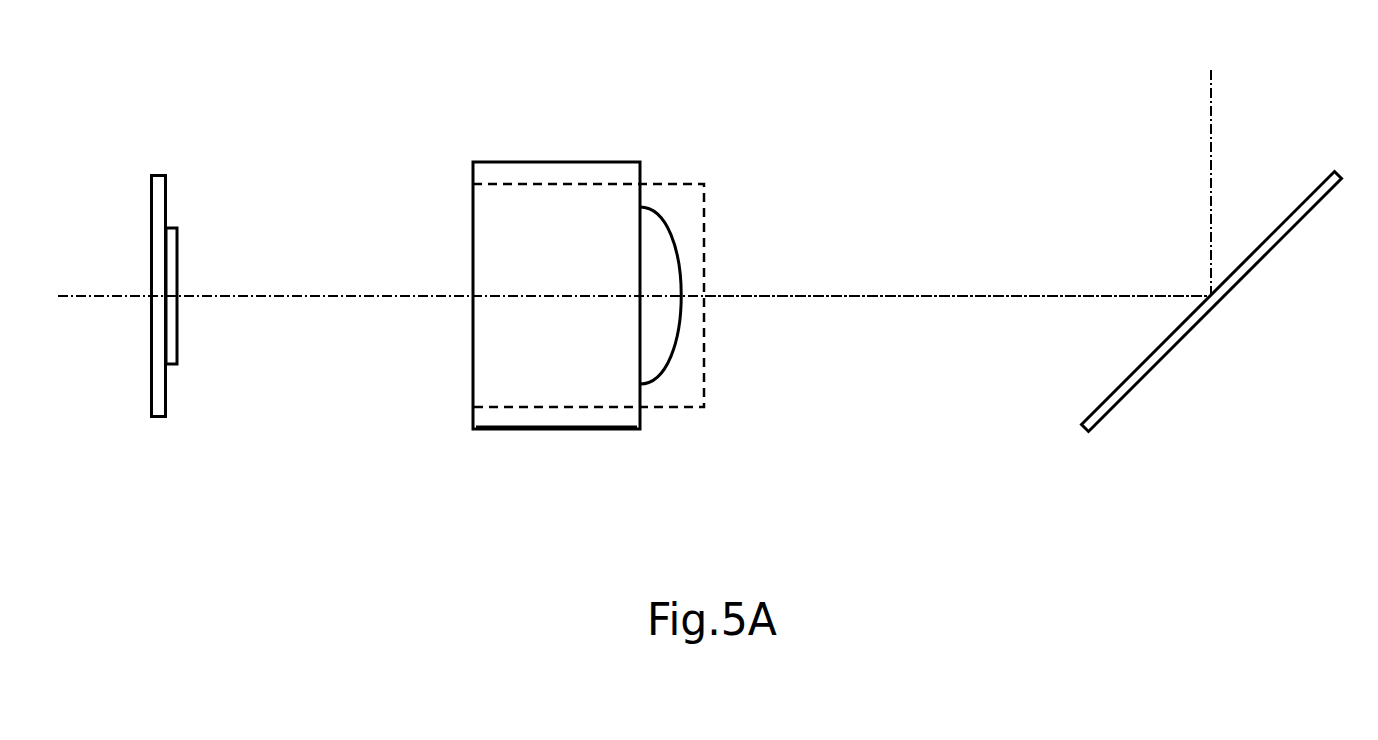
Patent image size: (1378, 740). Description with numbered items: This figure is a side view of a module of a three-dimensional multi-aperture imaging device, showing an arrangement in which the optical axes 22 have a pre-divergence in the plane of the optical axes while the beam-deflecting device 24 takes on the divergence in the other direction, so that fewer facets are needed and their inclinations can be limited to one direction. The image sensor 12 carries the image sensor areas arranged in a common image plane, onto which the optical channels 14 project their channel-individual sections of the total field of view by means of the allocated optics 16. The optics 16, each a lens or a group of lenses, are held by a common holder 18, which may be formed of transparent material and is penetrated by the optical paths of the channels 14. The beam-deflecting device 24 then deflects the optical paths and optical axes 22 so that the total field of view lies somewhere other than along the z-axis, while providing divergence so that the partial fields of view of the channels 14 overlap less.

The image sensor 12 is at (150, 148).
The optical channels 14 is at (566, 130).
The optics 16 is at (704, 227).
The holder 18 is at (557, 430).
The optical axes 22 is at (979, 296).
The beam-deflecting device 24 is at (1270, 265).